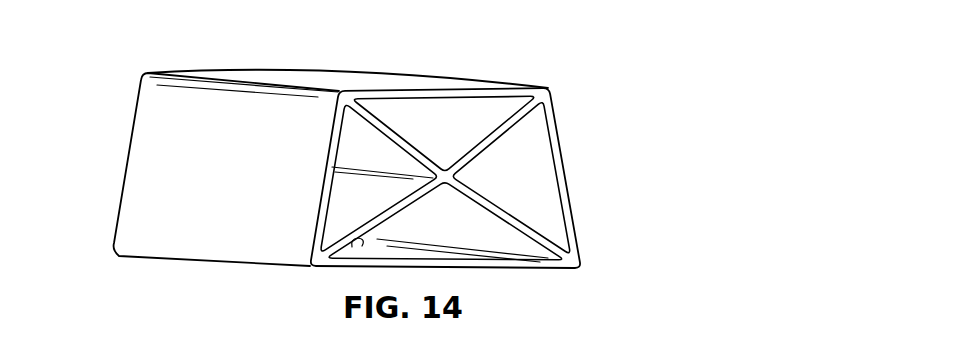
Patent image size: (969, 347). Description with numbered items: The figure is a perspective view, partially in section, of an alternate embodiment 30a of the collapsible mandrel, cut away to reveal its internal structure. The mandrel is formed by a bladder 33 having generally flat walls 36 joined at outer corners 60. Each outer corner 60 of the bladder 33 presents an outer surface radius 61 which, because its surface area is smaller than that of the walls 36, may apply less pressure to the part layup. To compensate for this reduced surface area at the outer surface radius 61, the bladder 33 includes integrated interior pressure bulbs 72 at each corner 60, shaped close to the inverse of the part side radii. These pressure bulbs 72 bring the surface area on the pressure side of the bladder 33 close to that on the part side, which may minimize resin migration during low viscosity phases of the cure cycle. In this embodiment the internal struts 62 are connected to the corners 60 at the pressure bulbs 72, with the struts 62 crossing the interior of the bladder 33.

The alternate embodiment of the mandrel 30a is at (108, 127).
The bladder 33 is at (140, 182).
The walls 36 is at (187, 200).
The outer corners 60 is at (312, 94).
The outer surface radius 61 is at (331, 80).
The struts 62 is at (420, 157).
The integrated interior pressure bulbs 72 is at (348, 104).